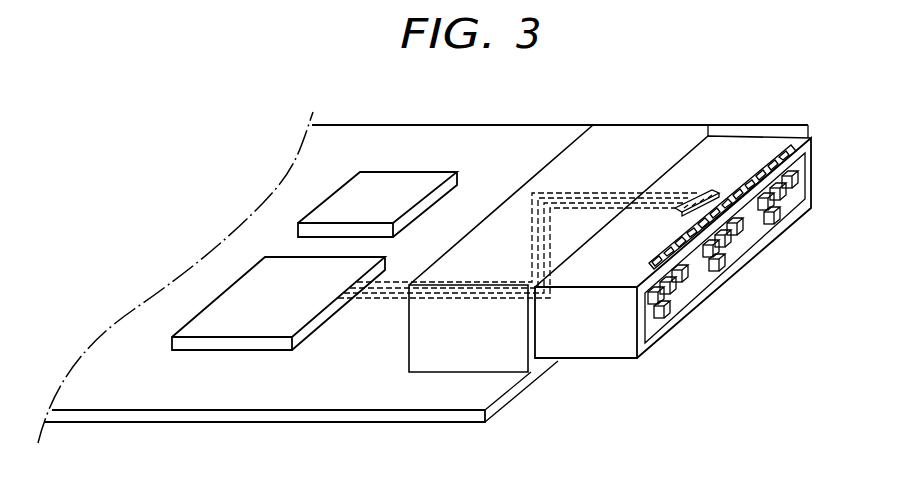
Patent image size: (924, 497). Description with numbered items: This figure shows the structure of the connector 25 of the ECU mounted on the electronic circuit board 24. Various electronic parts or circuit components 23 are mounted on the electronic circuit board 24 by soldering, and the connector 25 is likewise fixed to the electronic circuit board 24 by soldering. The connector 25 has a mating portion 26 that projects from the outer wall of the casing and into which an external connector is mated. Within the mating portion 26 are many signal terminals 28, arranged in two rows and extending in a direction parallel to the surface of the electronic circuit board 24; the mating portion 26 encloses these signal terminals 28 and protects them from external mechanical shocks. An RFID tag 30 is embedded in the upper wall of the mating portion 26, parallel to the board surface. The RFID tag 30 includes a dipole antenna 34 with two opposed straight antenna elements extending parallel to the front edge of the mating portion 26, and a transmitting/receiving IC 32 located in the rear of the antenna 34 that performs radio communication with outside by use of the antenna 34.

The electronic parts or circuit components 23 is at (317, 215).
The electronic circuit board 24 is at (483, 395).
The connector 25 is at (816, 191).
The mating portion 26 is at (612, 347).
The signal terminals 28 is at (763, 230).
The RFID tag 30 is at (692, 178).
The transmitting/receiving IC 32 is at (705, 193).
The dipole antenna 34 is at (787, 149).